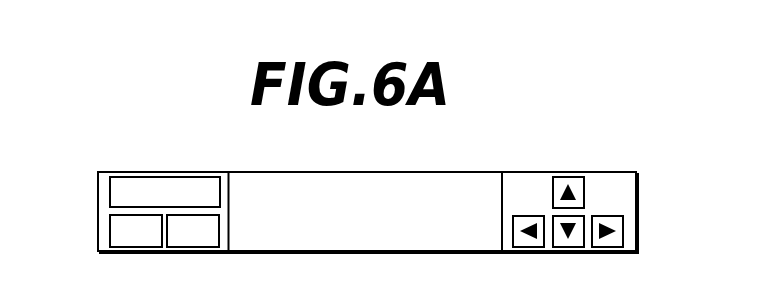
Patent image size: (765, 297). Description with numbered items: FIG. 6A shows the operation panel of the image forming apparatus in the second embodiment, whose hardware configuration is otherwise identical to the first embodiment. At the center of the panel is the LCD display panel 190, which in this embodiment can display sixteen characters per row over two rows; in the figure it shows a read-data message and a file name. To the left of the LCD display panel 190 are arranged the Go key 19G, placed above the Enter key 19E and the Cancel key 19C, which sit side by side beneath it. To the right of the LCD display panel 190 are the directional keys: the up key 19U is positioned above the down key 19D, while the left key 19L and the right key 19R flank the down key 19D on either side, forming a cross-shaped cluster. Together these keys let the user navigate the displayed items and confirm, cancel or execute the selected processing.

The LCD display panel 190 is at (420, 172).
The Go key 19G is at (225, 172).
The Enter key 19E is at (108, 247).
The Cancel key 19C is at (165, 247).
The up key 19U is at (587, 173).
The left key 19L is at (512, 248).
The down key 19D is at (550, 248).
The right key 19R is at (627, 250).